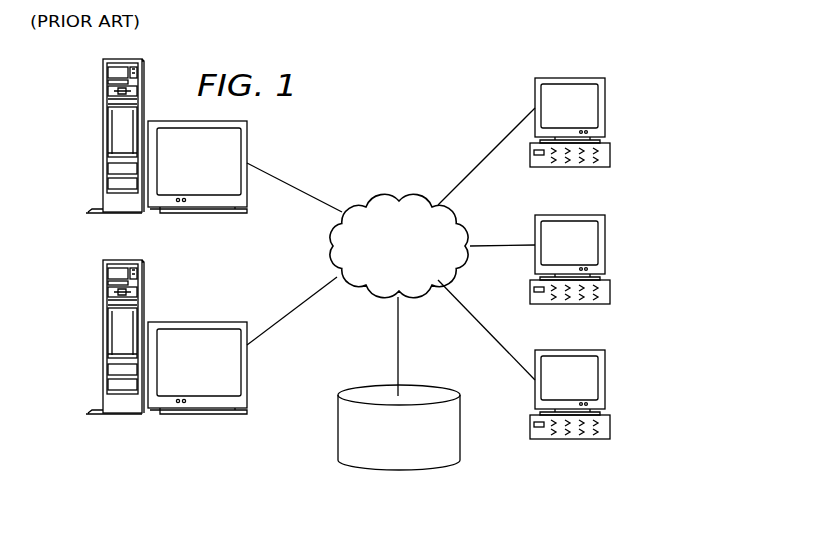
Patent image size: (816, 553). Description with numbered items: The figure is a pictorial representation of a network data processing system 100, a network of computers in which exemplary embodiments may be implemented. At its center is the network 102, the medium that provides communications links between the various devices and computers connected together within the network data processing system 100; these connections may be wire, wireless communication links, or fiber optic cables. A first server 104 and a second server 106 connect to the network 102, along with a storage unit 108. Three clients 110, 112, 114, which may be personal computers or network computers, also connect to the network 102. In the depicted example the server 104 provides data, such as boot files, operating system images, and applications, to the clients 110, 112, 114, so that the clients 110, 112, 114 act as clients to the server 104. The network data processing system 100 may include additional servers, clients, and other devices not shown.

The network data processing system 100 is at (446, 91).
The network 102 is at (370, 197).
The server 104 is at (103, 138).
The server 106 is at (103, 339).
The storage unit 108 is at (380, 470).
The client 110 is at (606, 108).
The client 112 is at (606, 244).
The client 114 is at (606, 380).